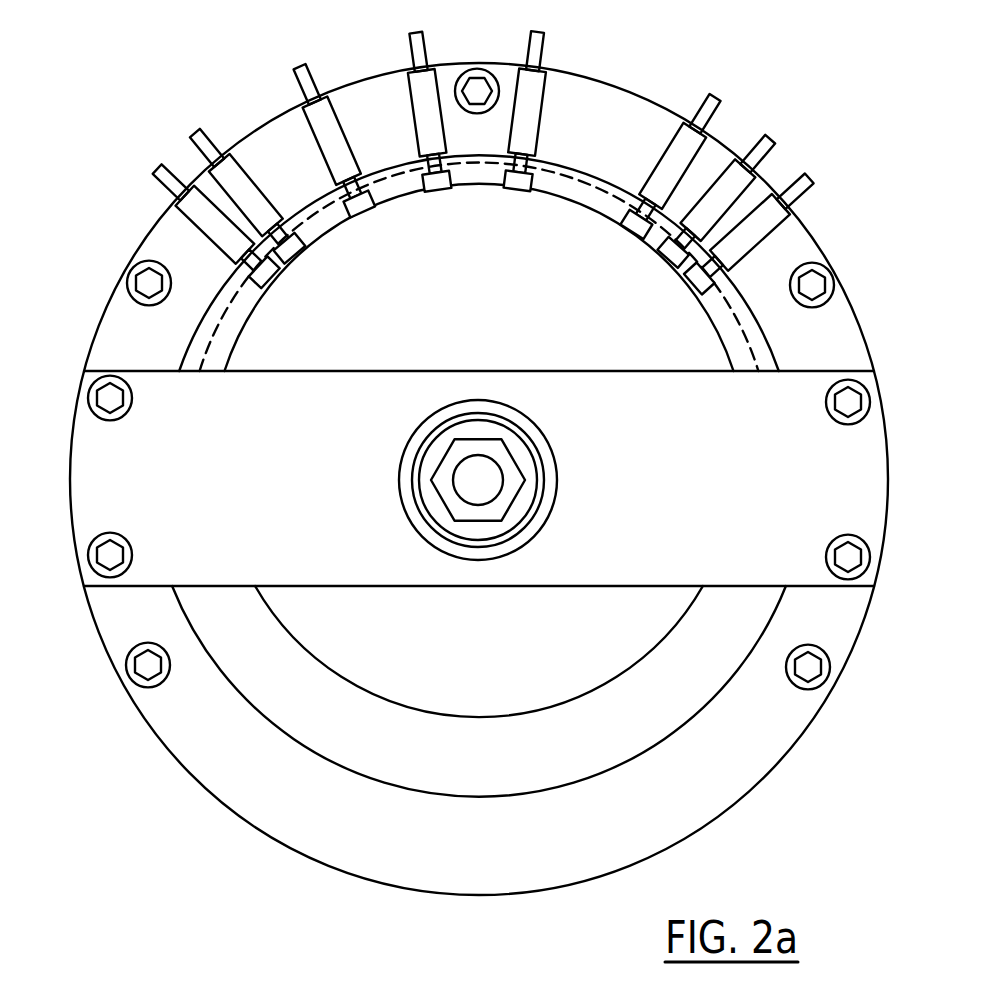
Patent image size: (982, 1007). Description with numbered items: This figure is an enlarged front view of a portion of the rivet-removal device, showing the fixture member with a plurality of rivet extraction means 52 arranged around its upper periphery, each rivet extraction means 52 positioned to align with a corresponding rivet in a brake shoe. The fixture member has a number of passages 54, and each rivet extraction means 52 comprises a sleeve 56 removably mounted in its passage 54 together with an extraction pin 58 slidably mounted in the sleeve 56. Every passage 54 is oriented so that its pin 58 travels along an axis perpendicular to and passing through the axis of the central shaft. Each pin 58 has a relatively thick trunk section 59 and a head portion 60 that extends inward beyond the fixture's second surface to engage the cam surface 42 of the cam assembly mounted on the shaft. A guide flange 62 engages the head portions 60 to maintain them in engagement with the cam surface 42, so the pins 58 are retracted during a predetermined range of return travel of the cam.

The cam surface 42 is at (700, 613).
The rivet extraction means 52 is at (836, 145).
The passage 54 is at (758, 243).
The sleeve 56 is at (692, 157).
The extraction pin 58 is at (712, 93).
The trunk section 59 is at (665, 148).
The head portion 60 is at (705, 290).
The guide flange 62 is at (200, 338).